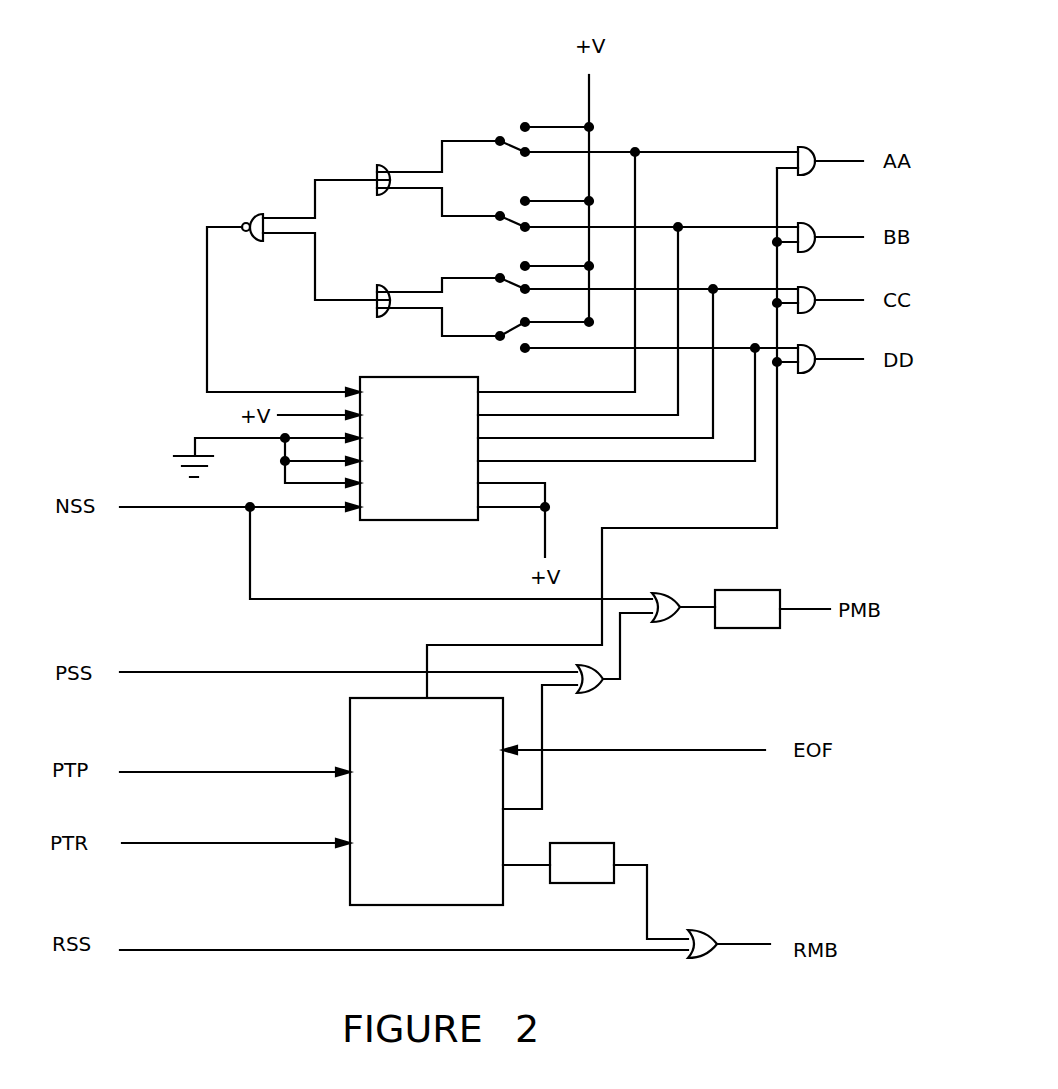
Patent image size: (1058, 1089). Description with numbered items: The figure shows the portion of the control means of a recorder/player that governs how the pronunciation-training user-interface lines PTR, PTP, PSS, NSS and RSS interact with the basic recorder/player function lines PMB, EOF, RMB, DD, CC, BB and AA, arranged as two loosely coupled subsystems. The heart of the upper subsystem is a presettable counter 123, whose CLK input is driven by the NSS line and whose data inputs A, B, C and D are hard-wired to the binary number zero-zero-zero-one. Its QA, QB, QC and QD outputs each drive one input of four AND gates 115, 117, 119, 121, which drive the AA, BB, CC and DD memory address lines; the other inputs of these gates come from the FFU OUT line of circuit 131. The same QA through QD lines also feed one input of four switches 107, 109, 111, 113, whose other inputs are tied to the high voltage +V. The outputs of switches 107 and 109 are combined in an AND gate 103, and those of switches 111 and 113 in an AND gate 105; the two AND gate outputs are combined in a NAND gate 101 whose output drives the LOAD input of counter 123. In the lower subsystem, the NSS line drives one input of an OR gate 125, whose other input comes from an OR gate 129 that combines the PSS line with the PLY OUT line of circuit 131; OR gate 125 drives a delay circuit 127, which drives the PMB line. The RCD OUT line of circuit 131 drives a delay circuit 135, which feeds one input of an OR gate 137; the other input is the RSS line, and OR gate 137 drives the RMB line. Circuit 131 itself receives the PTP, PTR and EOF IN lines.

The NAND gate 101 is at (248, 208).
The AND gate 103 is at (372, 168).
The AND gate 105 is at (372, 310).
The switch 107 is at (497, 127).
The switch 109 is at (505, 232).
The switch 111 is at (503, 267).
The switch 113 is at (497, 348).
The AND gate 115 is at (812, 142).
The AND gate 117 is at (812, 220).
The AND gate 119 is at (813, 288).
The AND gate 121 is at (813, 350).
The presettable counter 123 is at (393, 537).
The OR gate 125 is at (665, 588).
The delay circuit 127 is at (742, 635).
The OR gate 129 is at (595, 693).
The circuit 131 is at (337, 730).
The delay circuit 135 is at (594, 895).
The OR gate 137 is at (708, 930).